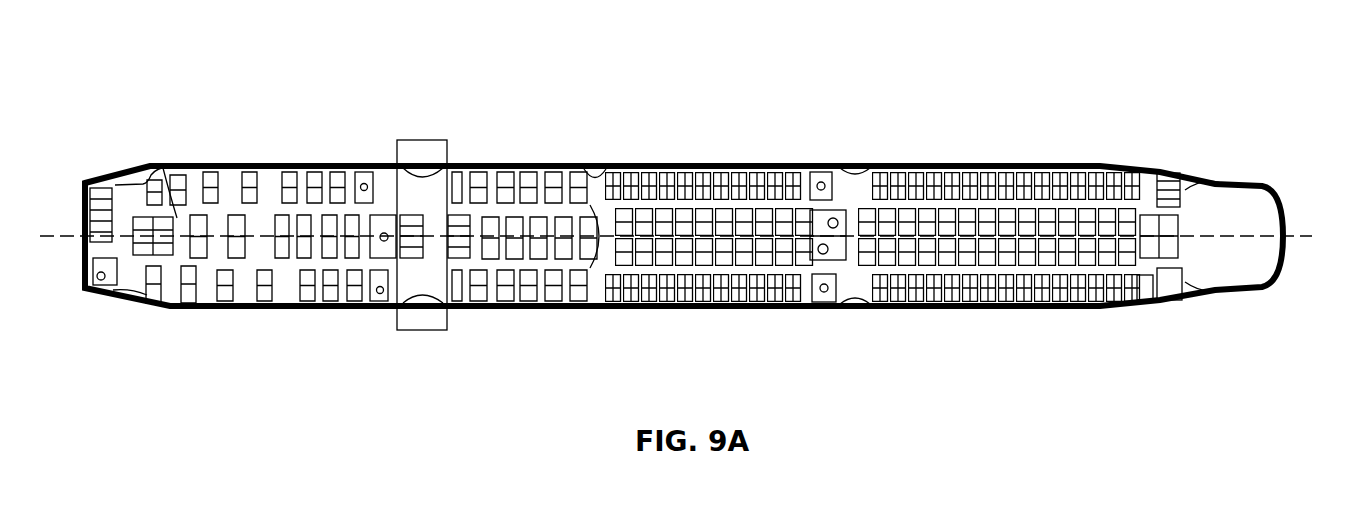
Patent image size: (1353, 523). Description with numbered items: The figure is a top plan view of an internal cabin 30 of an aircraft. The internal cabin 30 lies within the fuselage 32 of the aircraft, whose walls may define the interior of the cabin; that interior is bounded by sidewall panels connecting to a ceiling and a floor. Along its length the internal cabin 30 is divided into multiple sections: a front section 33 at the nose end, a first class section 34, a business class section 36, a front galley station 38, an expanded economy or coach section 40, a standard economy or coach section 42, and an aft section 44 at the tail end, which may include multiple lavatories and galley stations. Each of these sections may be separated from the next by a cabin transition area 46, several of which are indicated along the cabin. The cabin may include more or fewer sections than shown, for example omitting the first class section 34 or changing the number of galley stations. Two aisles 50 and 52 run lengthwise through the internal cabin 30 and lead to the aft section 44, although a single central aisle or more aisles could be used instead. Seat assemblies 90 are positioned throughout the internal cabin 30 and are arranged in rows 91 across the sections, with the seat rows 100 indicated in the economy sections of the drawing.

The internal cabin 30 is at (215, 68).
The fuselage 32 is at (543, 122).
The front section 33 is at (136, 318).
The first class section 34 is at (233, 310).
The business class section 36 is at (306, 160).
The front galley station 38 is at (425, 325).
The expanded economy or coach section 40 is at (522, 310).
The standard economy or coach section 42 is at (650, 163).
The aft section 44 is at (1210, 190).
The cabin transition area 46 is at (157, 162).
The aisle 50 is at (1003, 205).
The aisle 52 is at (1018, 290).
The seat assembly 90 is at (770, 163).
The row 91 is at (766, 156).
The seat row 100 is at (610, 310).